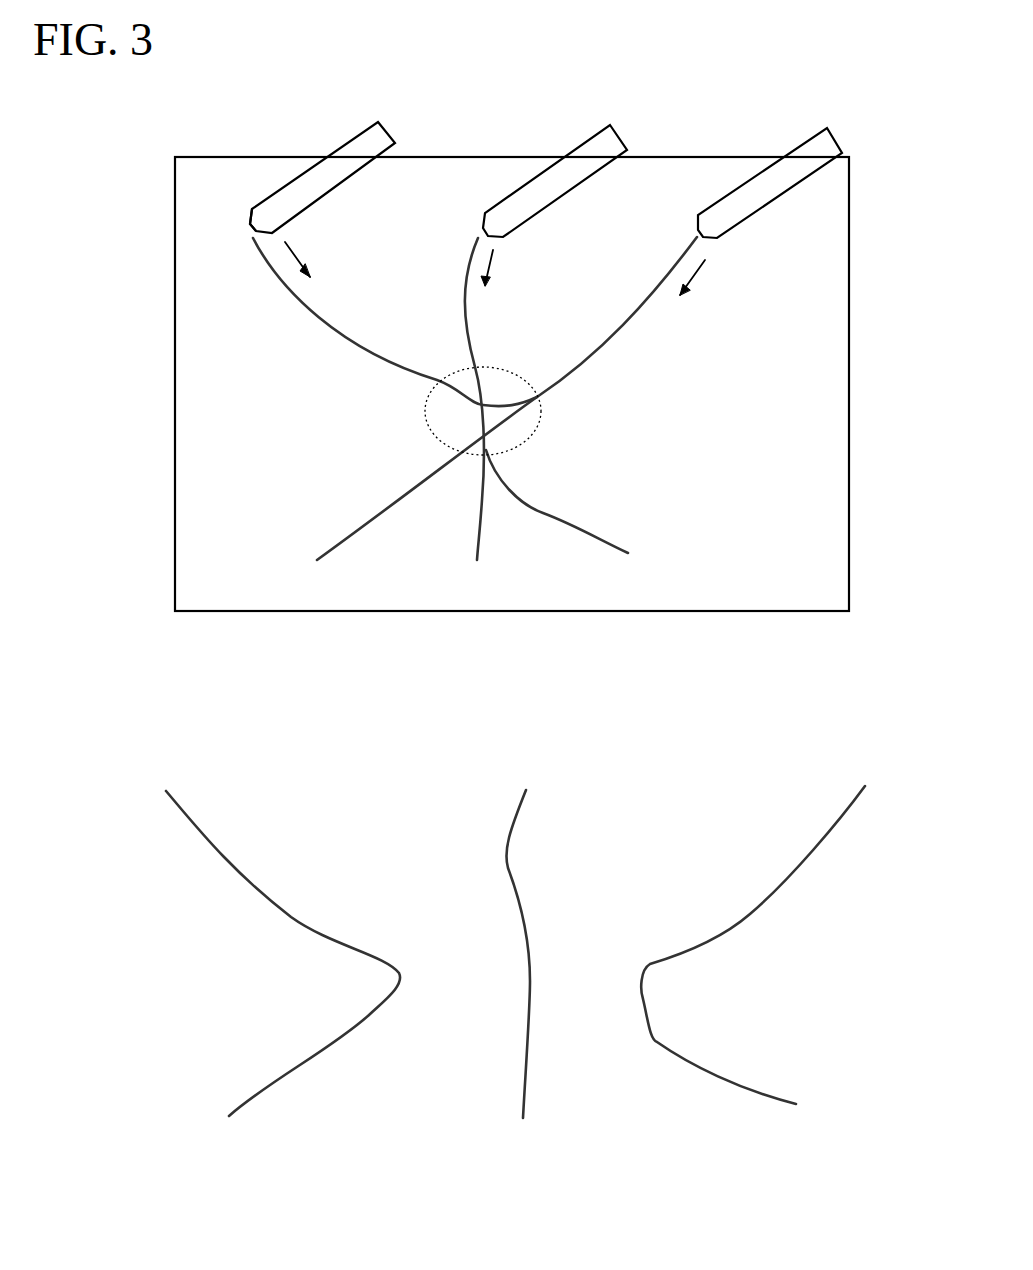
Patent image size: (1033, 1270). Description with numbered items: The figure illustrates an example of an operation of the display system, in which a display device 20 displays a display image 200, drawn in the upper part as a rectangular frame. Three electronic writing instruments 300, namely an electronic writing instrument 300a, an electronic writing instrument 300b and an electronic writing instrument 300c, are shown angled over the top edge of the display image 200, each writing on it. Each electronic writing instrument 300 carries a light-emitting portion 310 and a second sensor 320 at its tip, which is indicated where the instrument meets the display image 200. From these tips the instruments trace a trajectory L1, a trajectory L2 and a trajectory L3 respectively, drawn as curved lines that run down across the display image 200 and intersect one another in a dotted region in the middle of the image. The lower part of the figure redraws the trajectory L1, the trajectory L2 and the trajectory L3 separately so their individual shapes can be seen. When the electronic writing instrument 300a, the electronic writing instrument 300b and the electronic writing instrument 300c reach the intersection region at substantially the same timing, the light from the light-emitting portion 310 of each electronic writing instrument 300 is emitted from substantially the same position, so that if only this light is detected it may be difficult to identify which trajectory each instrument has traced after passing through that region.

The display image 200 is at (482, 349).
The display device 20 is at (185, 156).
The electronic writing instrument 300 is at (546, 159).
The electronic writing instrument 300a is at (341, 144).
The electronic writing instrument 300b is at (577, 144).
The electronic writing instrument 300c is at (797, 144).
The light-emitting portion 310 is at (149, 204).
The second sensor 320 is at (238, 222).
The trajectory L1 is at (291, 782).
The trajectory L2 is at (554, 785).
The trajectory L3 is at (804, 784).